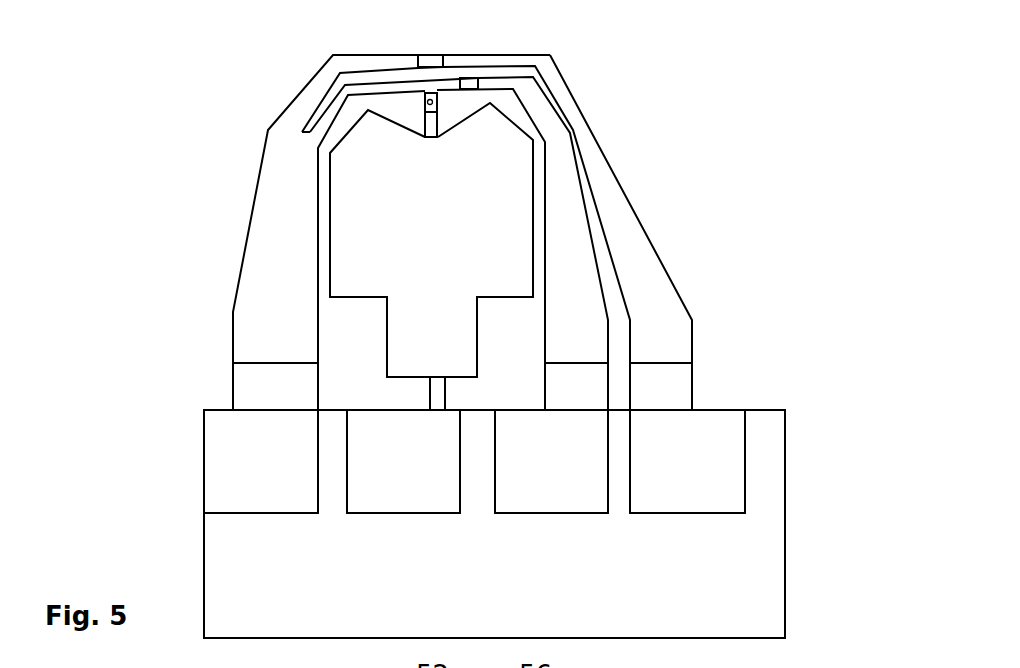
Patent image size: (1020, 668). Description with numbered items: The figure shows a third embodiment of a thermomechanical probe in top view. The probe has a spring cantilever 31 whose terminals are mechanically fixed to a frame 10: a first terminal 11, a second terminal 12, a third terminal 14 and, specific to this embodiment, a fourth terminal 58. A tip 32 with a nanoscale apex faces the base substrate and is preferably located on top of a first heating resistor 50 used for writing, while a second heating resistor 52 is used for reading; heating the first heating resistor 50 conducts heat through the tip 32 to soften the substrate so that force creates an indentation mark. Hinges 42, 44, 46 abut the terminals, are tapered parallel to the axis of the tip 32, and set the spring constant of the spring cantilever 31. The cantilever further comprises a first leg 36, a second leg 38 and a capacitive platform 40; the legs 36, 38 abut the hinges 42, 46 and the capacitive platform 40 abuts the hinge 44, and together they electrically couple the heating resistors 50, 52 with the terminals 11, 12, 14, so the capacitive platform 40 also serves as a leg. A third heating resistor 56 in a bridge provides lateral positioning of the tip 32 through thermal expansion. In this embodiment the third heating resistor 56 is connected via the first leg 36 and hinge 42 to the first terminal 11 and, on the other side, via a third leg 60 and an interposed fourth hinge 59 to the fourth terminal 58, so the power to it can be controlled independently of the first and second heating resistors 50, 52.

The frame 10 is at (767, 562).
The first terminal 11 is at (260, 507).
The second terminal 12 is at (401, 507).
The fourth terminal 58 is at (550, 504).
The third terminal 14 is at (686, 504).
The spring cantilever 31 is at (238, 189).
The tip 32 is at (433, 102).
The first leg 36 is at (238, 273).
The second leg 38 is at (642, 245).
The capacitive platform 40 is at (503, 287).
The first hinge 42 is at (245, 385).
The second hinge 44 is at (430, 395).
The third hinge 46 is at (685, 377).
The first heating resistor 50 is at (422, 92).
The second heating resistor 52 is at (433, 55).
The third heating resistor 56 is at (470, 78).
The fourth hinge 59 is at (560, 395).
The third leg 60 is at (575, 240).